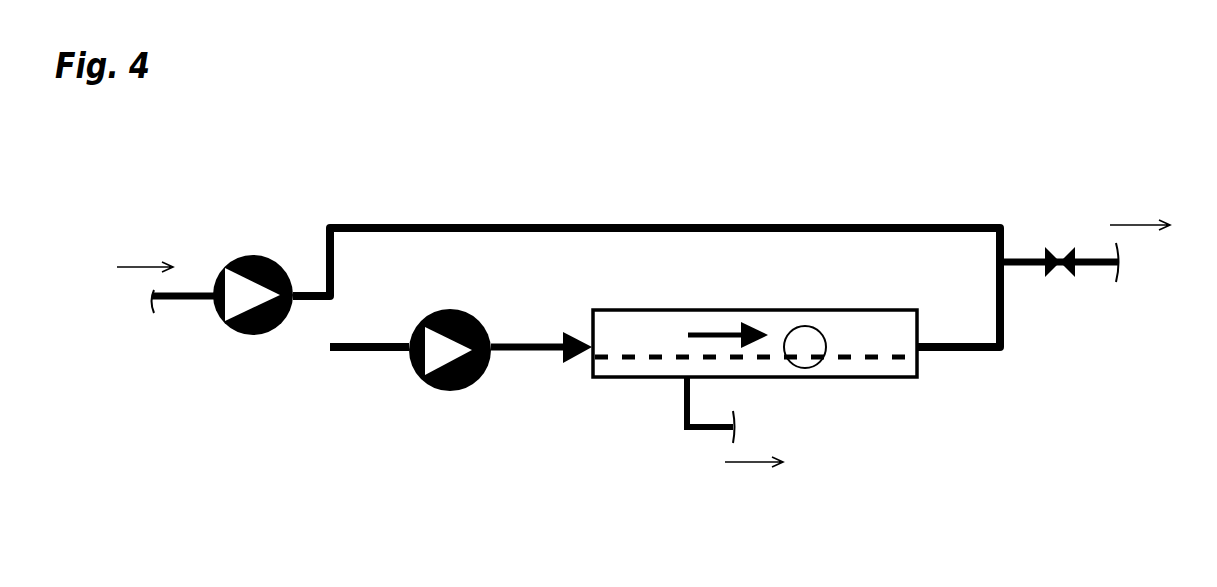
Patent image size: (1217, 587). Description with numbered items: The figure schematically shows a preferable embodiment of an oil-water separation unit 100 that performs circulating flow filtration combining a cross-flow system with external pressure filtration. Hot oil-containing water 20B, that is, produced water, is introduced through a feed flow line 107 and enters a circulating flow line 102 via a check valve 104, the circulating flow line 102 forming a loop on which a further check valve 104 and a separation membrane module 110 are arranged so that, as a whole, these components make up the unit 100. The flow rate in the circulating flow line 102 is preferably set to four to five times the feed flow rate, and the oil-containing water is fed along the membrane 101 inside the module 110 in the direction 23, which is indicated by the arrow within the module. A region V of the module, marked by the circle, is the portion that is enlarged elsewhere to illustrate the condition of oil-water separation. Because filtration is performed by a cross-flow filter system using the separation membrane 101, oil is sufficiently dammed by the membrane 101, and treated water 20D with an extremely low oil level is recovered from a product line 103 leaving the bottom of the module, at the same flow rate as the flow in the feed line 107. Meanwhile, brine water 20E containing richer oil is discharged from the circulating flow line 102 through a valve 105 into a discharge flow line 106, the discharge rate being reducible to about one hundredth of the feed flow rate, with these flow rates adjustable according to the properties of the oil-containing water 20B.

The oil-water separation unit 100 is at (433, 190).
The membrane 101 is at (617, 382).
The circulating flow line 102 is at (641, 225).
The product line 103 is at (682, 412).
The check valve 104 is at (240, 293).
The valve 105 is at (1059, 250).
The discharge flow line 106 is at (1097, 268).
The feed flow line 107 is at (192, 302).
The separation membrane module 110 is at (620, 303).
The direction 23 is at (728, 332).
The region V is at (815, 322).
The oil-containing water 20B is at (142, 349).
The treated water 20D is at (847, 426).
The brine water 20E is at (1169, 288).